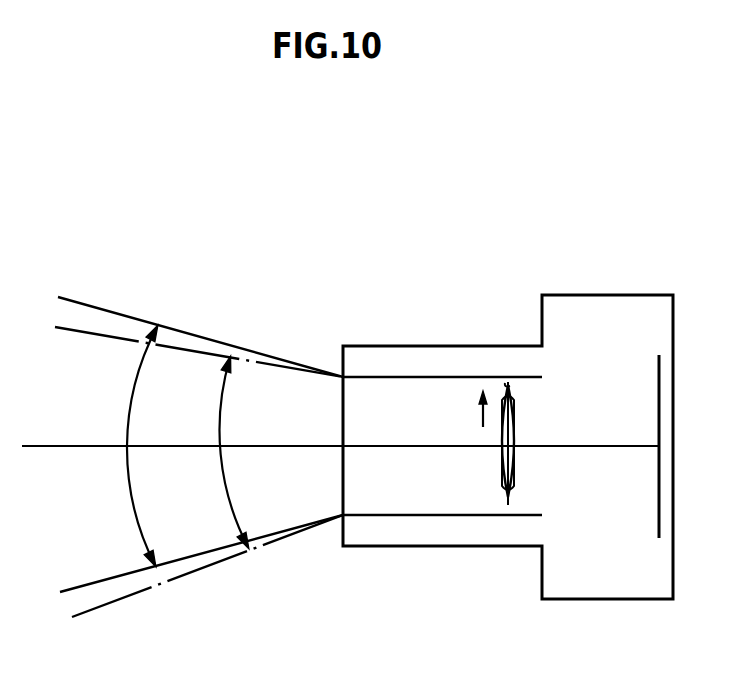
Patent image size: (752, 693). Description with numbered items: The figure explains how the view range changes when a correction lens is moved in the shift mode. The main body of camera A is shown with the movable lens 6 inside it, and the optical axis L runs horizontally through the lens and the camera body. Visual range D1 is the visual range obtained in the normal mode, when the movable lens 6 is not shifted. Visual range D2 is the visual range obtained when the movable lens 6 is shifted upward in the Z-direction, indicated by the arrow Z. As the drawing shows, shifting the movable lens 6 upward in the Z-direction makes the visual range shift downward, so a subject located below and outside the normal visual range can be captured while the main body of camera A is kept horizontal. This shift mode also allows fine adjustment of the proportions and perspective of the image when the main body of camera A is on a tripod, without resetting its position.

The main body of camera A is at (640, 295).
The optical axis L is at (47, 447).
The visual range D1 is at (128, 408).
The visual range D2 is at (220, 424).
The Z-direction Z is at (468, 412).
The movable lens 6 is at (498, 475).